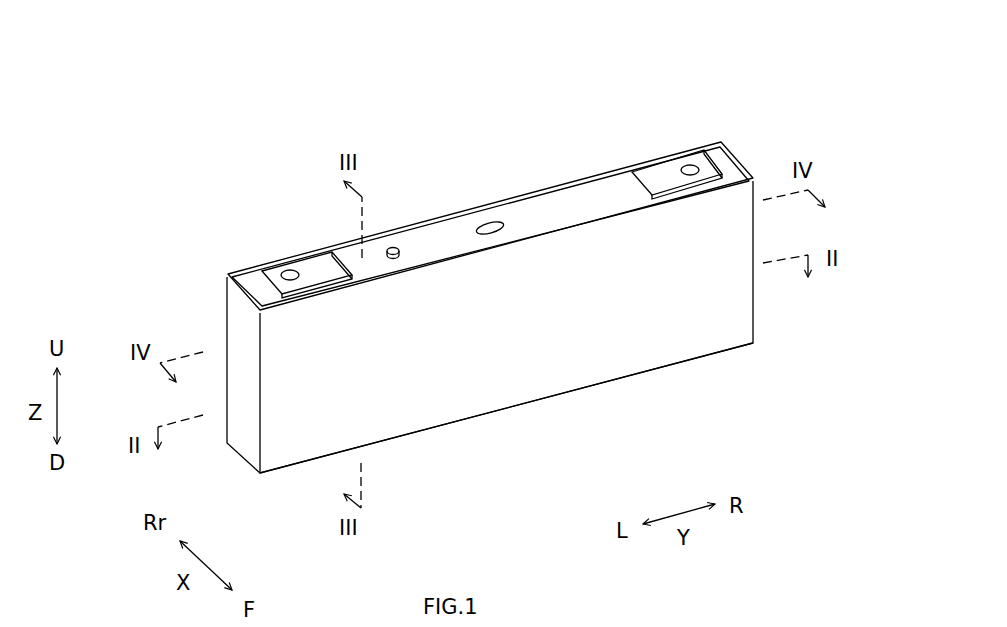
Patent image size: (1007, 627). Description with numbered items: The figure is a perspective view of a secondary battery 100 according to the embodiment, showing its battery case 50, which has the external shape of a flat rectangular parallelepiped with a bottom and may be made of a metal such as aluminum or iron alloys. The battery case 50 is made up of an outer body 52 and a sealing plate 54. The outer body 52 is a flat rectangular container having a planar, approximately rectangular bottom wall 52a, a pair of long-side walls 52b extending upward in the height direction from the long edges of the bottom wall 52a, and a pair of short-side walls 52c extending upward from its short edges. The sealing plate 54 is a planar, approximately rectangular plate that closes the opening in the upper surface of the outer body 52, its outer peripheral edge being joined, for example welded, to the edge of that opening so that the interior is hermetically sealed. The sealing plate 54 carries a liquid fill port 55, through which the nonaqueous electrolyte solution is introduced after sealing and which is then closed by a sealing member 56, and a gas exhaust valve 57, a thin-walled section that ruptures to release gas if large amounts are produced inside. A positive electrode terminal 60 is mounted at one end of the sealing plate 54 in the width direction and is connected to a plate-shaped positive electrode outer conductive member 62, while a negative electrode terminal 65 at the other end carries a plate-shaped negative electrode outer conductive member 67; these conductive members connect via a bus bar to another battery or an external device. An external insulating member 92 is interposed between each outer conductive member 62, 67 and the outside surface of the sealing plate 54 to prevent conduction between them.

The secondary battery 100 is at (515, 252).
The battery case 50 is at (515, 291).
The outer body 52 is at (515, 315).
The bottom wall 52a is at (467, 426).
The long-side walls 52b is at (474, 198).
The short-side walls 52c is at (237, 442).
The sealing plate 54 is at (490, 219).
The liquid fill port 55 is at (399, 250).
The sealing member 56 is at (393, 247).
The gas exhaust valve 57 is at (492, 217).
The positive electrode terminal 60 is at (288, 270).
The positive electrode outer conductive member 62 is at (302, 247).
The negative electrode terminal 65 is at (688, 165).
The negative electrode outer conductive member 67 is at (672, 146).
The external insulating member 92 is at (246, 272).